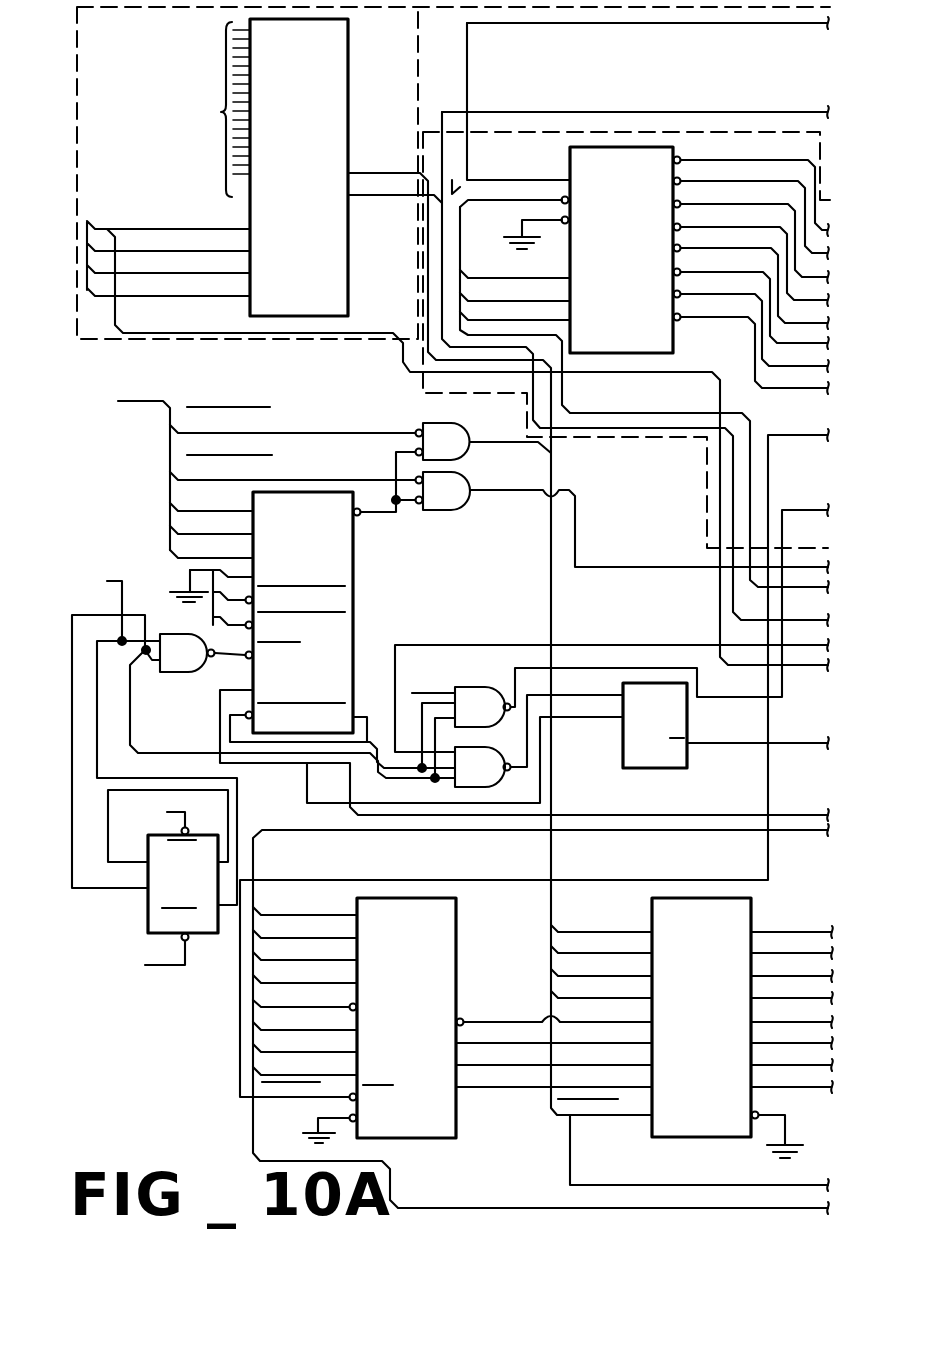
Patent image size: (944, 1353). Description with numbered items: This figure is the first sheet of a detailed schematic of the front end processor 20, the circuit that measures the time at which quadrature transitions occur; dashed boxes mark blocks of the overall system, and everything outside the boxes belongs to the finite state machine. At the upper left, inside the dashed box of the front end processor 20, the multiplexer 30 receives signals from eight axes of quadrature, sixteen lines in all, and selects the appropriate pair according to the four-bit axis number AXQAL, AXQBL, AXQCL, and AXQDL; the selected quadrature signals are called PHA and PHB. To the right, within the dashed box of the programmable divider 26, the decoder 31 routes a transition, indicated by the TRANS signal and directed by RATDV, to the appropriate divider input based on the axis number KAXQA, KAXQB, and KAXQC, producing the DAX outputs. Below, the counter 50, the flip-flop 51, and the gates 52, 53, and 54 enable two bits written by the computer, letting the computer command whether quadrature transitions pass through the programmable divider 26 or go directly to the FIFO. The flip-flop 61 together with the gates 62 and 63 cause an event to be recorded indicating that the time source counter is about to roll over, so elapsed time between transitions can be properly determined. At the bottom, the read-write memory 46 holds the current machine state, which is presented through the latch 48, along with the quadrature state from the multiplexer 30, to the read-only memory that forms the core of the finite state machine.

The front end processor 20 is at (418, 75).
The programmable divider 26 is at (705, 447).
The multiplexer 30 is at (309, 180).
The decoder 31 is at (634, 274).
The read-write memory (RAM) 46 is at (422, 1010).
The latch 48 is at (715, 1010).
The counter 50 is at (318, 544).
The flip-flop 51 is at (203, 940).
The gate 52 is at (425, 420).
The gate 53 is at (441, 512).
The gate 54 is at (191, 675).
The flip-flop 61 is at (678, 768).
The gate 62 is at (501, 776).
The gate 63 is at (496, 686).